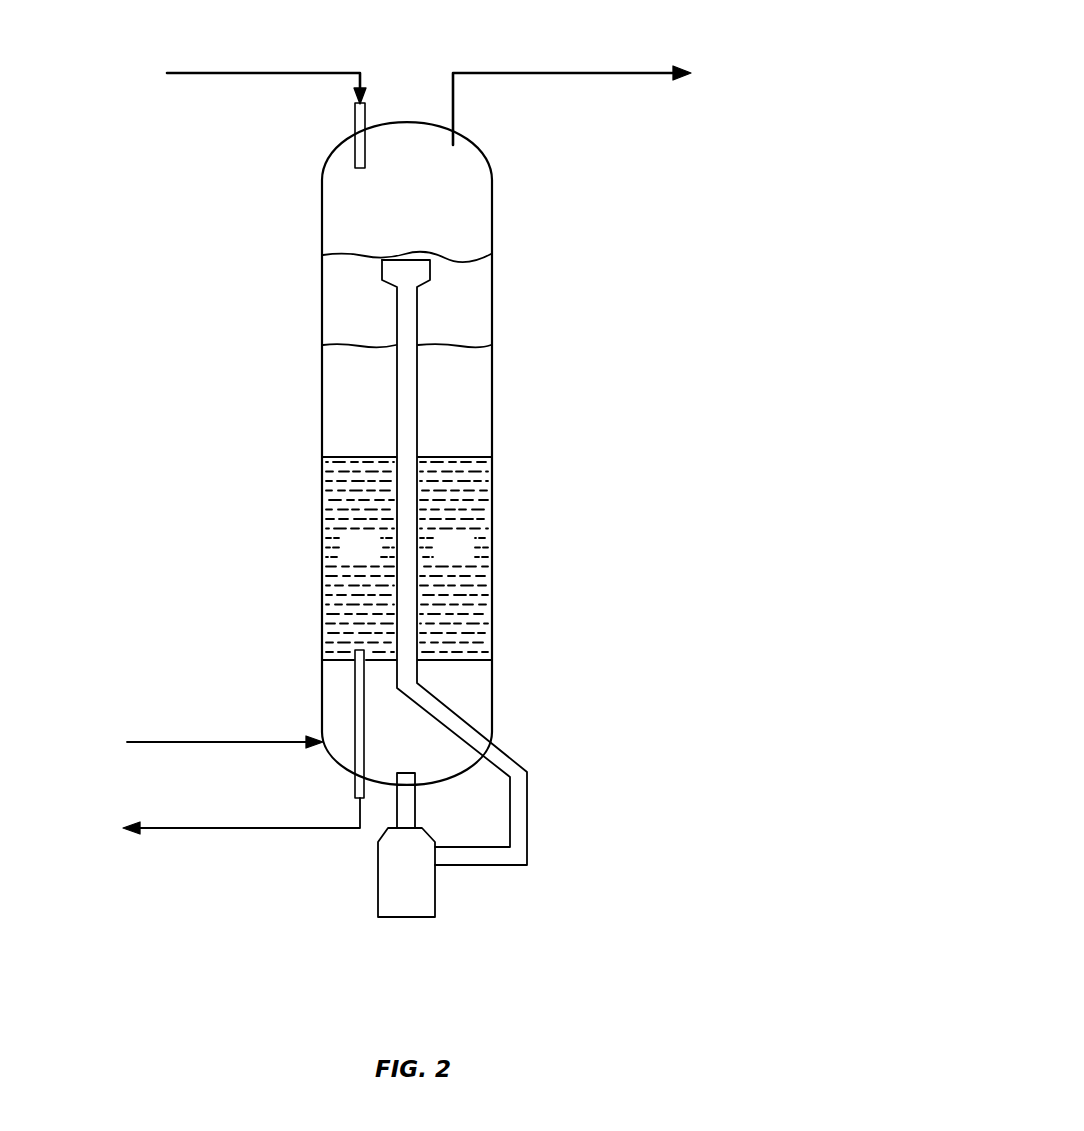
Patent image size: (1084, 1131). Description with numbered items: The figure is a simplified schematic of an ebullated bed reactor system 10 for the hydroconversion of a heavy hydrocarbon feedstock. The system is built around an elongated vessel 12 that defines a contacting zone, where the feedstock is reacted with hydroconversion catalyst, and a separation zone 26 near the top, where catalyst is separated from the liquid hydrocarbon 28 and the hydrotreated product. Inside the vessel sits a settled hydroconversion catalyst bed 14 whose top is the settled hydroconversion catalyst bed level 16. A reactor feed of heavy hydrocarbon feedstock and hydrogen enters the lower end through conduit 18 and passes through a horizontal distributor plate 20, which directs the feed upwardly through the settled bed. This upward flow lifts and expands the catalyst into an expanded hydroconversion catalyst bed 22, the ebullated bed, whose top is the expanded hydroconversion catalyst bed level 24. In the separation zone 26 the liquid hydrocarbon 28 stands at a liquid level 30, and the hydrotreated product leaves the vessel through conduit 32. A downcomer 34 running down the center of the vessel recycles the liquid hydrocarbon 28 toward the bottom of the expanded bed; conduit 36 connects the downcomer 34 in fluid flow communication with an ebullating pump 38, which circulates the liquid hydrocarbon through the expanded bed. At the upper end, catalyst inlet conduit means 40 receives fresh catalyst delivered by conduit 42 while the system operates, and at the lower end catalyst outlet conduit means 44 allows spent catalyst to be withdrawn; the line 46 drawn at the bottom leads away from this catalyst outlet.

The ebullated bed reactor system 10 is at (688, 192).
The elongated vessel 12 is at (493, 281).
The settled hydroconversion catalyst bed 14 is at (376, 560).
The settled hydroconversion catalyst bed level 16 is at (463, 457).
The conduit 18 is at (170, 742).
The horizontal distributor plate 20 is at (337, 661).
The expanded hydroconversion catalyst bed 22 is at (379, 409).
The expanded hydroconversion catalyst bed level 24 is at (465, 345).
The separation zone 26 is at (421, 209).
The liquid hydrocarbon 28 is at (380, 317).
The liquid level 30 is at (467, 257).
The conduit 32 is at (503, 73).
The downcomer 34 is at (395, 370).
The conduit 36 is at (530, 781).
The ebullating pump 38 is at (378, 882).
The catalyst inlet conduit means 40 is at (355, 123).
The conduit 42 is at (267, 73).
The catalyst outlet conduit means 44 is at (355, 758).
The product outlet line 46 is at (215, 828).